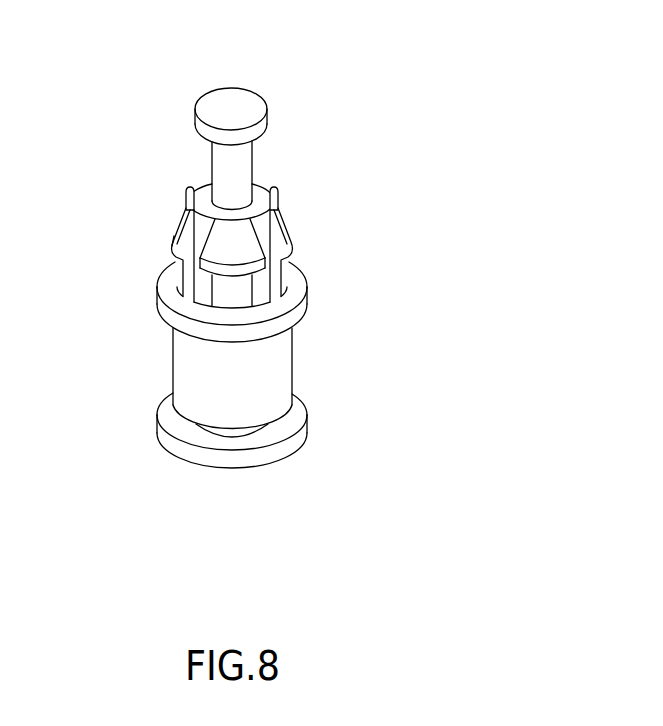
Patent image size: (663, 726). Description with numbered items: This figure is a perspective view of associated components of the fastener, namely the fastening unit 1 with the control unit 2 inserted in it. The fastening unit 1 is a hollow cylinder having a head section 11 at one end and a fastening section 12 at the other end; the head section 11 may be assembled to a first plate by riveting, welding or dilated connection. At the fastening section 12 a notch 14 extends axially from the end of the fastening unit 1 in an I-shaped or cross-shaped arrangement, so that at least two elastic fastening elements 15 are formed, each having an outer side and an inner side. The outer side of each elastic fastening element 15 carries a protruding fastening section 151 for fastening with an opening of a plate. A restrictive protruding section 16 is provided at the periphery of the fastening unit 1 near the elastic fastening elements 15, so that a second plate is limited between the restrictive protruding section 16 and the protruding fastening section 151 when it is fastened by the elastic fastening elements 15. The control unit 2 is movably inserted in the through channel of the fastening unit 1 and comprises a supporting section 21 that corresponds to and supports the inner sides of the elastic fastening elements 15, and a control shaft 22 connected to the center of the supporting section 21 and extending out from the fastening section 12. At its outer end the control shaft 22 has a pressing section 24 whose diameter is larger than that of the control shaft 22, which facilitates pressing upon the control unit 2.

The fastening unit 1 is at (223, 320).
The head section 11 is at (176, 447).
The fastening section 12 is at (193, 190).
The notch 14 is at (273, 248).
The elastic fastening element 15 is at (128, 228).
The protruding fastening section 151 is at (173, 241).
The restrictive protruding section 16 is at (193, 328).
The control unit 2 is at (243, 165).
The supporting section 21 is at (260, 228).
The control shaft 22 is at (214, 160).
The pressing section 24 is at (225, 101).